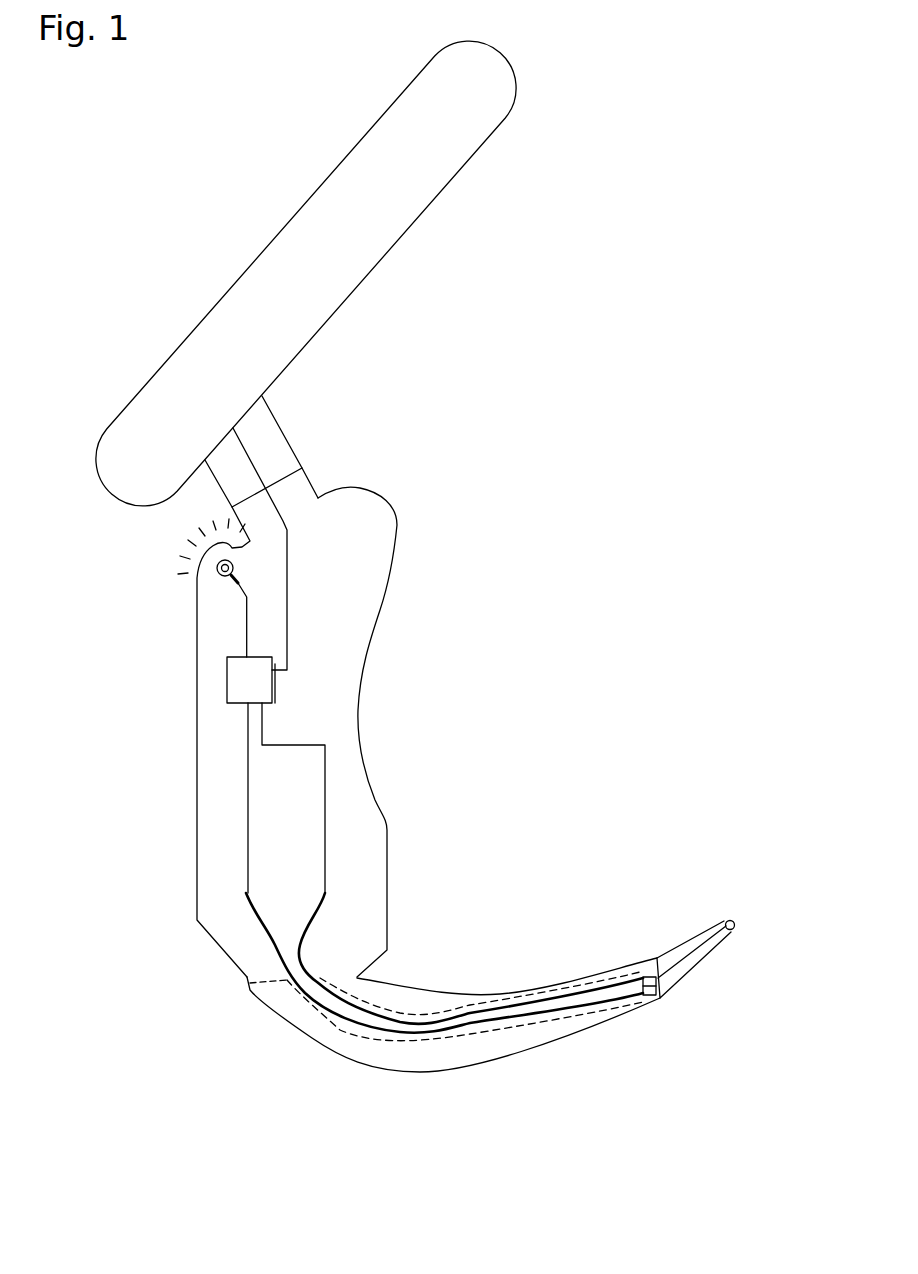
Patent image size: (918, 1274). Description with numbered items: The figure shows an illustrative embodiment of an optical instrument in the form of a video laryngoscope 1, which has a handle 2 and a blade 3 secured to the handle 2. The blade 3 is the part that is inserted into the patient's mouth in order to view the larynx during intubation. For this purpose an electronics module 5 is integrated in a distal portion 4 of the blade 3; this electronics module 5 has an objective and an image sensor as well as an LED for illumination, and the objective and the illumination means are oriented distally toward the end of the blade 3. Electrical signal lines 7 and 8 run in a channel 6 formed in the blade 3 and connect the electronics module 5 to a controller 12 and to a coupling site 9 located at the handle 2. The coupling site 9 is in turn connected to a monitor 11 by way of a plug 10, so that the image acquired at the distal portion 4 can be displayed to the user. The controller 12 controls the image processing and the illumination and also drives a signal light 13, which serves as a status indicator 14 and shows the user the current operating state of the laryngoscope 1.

The video laryngoscope 1 is at (655, 574).
The handle 2 is at (421, 525).
The blade 3 is at (575, 1058).
The distal portion 4 is at (700, 880).
The electronics module 5 is at (645, 977).
The channel 6 is at (460, 1033).
The electrical signal line 7 is at (274, 952).
The electrical signal line 8 is at (325, 883).
The coupling site 9 is at (311, 478).
The plug 10 is at (281, 426).
The monitor 11 is at (433, 200).
The controller 12 is at (227, 680).
The signal light 13 is at (203, 600).
The status indicator 14 is at (195, 572).